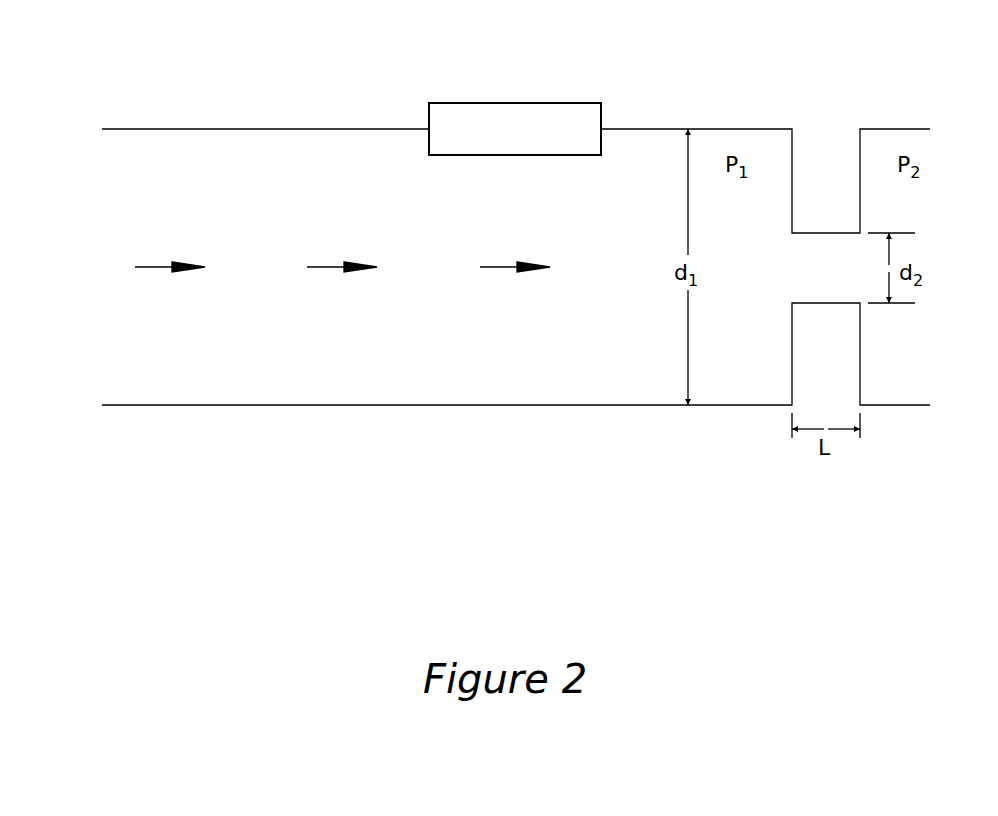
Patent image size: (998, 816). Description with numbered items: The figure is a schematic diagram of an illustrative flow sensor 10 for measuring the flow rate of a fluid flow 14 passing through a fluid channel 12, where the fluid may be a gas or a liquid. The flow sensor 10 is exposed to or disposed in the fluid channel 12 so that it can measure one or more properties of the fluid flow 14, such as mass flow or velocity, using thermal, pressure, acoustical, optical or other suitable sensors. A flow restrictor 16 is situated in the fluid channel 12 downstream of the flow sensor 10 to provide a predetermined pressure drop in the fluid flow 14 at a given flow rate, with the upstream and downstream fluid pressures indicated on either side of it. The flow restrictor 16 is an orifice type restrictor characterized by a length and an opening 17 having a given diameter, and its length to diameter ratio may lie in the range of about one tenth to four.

The flow sensor 10 is at (515, 103).
The fluid channel 12 is at (170, 172).
The fluid flow 14 is at (148, 268).
The flow restrictor 16 is at (825, 150).
The opening 17 is at (810, 273).